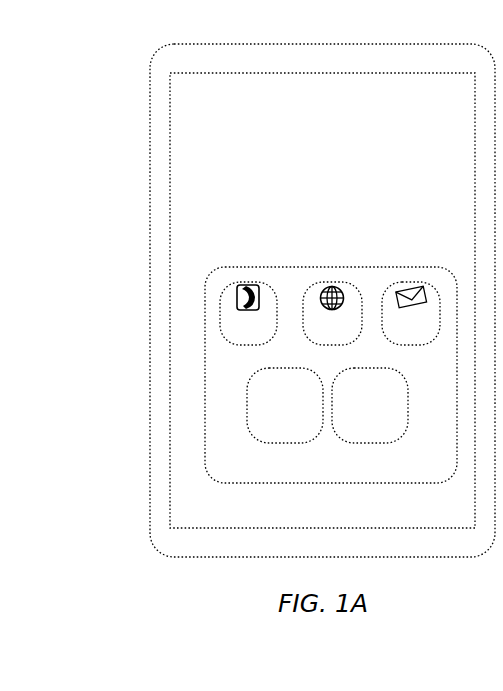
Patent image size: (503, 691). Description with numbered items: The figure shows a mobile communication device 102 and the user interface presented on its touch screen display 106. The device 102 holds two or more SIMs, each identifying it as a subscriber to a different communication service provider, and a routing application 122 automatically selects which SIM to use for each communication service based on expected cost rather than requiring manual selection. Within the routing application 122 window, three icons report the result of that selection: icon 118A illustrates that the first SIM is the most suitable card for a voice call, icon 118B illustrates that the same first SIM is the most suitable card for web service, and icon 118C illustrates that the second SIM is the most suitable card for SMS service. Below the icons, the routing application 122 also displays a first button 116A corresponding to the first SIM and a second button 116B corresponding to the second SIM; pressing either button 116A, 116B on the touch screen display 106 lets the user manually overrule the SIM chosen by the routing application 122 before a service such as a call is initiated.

The mobile communication device 102 is at (150, 125).
The touch screen display 106 is at (170, 322).
The icon 118A is at (248, 279).
The icon 118B is at (333, 279).
The icon 118C is at (410, 279).
The first button 116A is at (263, 426).
The second button 116B is at (348, 426).
The routing application 122 is at (502, 373).